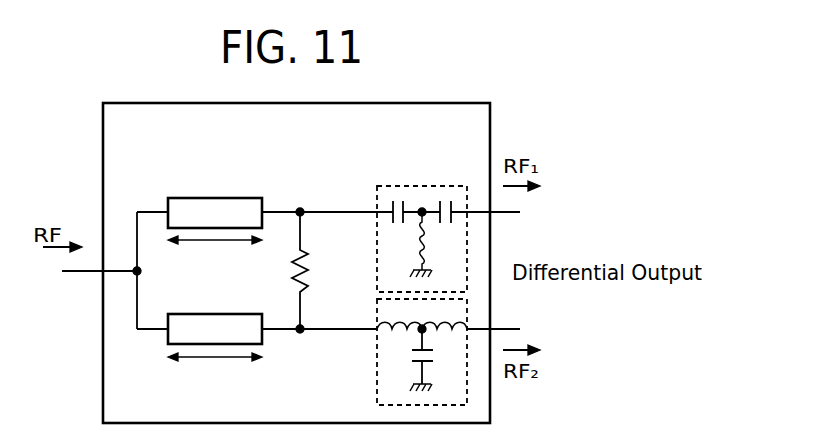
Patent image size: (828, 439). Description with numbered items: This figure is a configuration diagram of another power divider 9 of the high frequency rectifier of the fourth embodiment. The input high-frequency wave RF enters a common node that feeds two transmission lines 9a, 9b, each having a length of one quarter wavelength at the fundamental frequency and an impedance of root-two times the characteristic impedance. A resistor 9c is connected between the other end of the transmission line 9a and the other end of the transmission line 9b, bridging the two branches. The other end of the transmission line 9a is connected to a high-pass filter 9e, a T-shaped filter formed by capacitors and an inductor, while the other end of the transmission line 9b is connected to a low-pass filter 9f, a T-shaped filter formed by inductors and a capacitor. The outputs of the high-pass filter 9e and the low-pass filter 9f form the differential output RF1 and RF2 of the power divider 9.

The power divider 9 is at (103, 127).
The transmission line 9a is at (182, 198).
The transmission line 9b is at (168, 344).
The resistor 9c is at (306, 284).
The high-pass filter 9e is at (377, 186).
The low-pass filter 9f is at (377, 398).